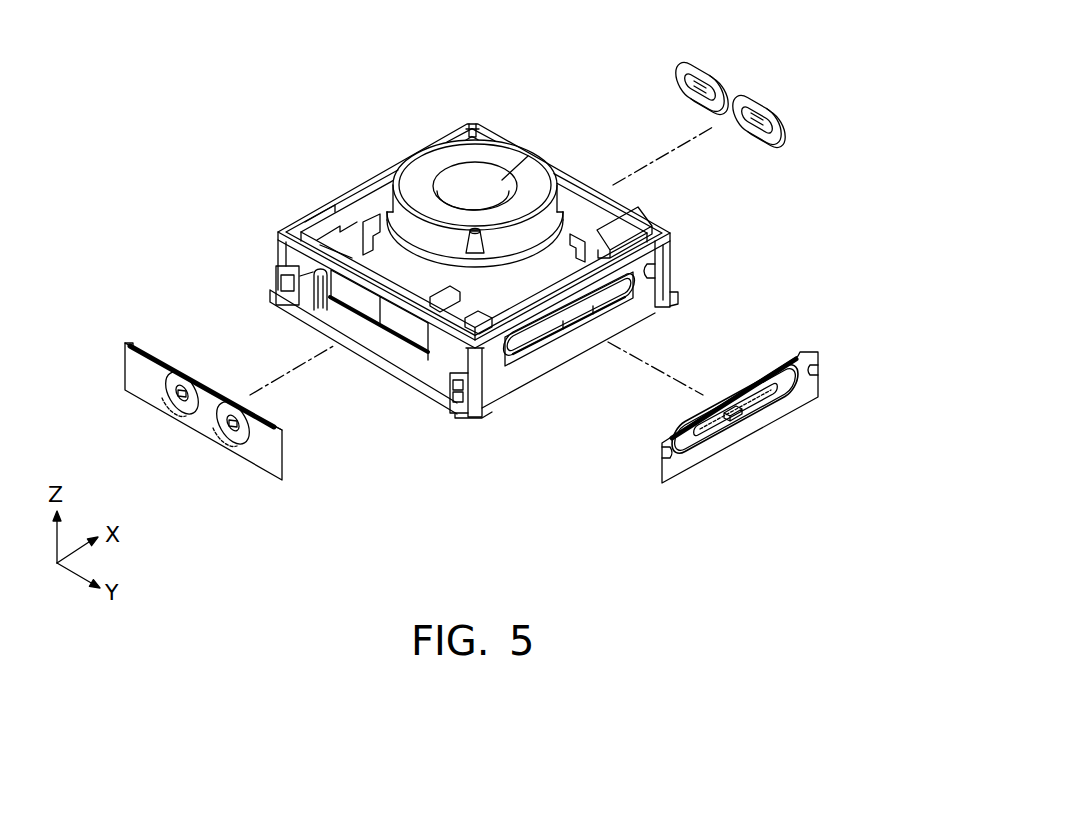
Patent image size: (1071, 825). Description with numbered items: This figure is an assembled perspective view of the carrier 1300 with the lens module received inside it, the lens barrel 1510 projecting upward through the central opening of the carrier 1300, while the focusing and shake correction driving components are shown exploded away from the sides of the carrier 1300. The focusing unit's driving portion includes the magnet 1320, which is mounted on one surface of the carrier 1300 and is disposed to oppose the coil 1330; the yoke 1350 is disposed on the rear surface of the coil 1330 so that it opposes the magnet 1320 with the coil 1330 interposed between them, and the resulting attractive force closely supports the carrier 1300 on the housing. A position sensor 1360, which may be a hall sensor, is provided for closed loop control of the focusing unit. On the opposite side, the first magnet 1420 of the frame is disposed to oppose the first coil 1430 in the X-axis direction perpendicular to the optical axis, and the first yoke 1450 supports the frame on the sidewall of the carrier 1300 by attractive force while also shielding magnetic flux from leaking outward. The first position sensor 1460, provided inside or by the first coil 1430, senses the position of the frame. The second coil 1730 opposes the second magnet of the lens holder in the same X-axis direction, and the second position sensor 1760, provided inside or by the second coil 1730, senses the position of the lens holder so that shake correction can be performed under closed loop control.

The carrier 1300 is at (315, 225).
The lens barrel 1510 is at (417, 148).
The first magnet 1420 is at (400, 330).
The magnet 1320 is at (535, 345).
The first yoke 1450 is at (268, 457).
The first coil 1430 is at (218, 424).
The first position sensor 1460 is at (230, 428).
The yoke 1350 is at (798, 390).
The coil 1330 is at (705, 445).
The position sensor 1360 is at (745, 412).
The second coil 1730 is at (703, 70).
The second position sensor 1760 is at (693, 86).